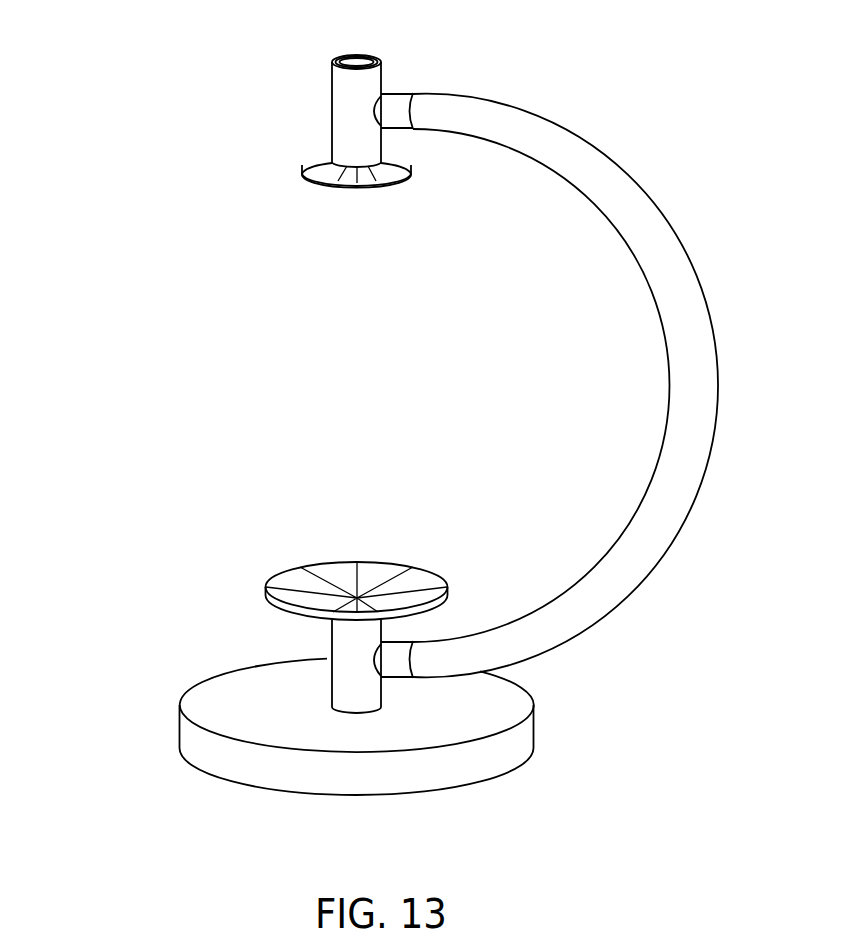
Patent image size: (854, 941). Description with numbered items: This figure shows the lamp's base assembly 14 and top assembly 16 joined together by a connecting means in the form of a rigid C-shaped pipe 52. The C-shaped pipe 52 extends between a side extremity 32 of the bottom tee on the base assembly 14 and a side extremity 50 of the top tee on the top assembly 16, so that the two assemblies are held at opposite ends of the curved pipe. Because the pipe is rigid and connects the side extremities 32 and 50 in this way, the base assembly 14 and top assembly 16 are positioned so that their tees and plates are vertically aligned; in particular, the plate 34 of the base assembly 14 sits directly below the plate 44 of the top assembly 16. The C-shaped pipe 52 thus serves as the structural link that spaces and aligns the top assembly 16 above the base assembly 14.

The base assembly 14 is at (164, 720).
The top assembly 16 is at (320, 94).
The side extremity of bottom tee 32 is at (398, 658).
The plate 34 is at (343, 588).
The plate 44 is at (382, 172).
The side extremity of top tee 50 is at (400, 101).
The rigid C-shaped pipe 52 is at (582, 153).